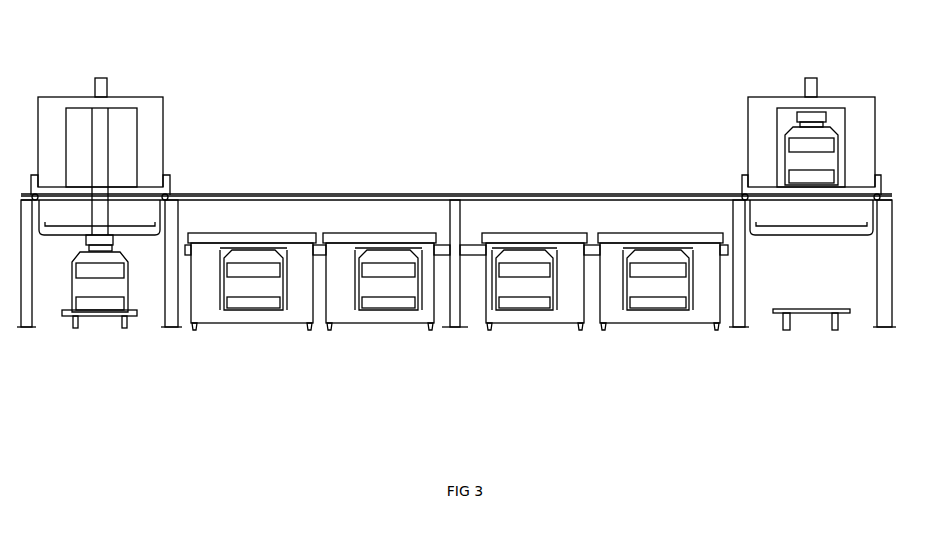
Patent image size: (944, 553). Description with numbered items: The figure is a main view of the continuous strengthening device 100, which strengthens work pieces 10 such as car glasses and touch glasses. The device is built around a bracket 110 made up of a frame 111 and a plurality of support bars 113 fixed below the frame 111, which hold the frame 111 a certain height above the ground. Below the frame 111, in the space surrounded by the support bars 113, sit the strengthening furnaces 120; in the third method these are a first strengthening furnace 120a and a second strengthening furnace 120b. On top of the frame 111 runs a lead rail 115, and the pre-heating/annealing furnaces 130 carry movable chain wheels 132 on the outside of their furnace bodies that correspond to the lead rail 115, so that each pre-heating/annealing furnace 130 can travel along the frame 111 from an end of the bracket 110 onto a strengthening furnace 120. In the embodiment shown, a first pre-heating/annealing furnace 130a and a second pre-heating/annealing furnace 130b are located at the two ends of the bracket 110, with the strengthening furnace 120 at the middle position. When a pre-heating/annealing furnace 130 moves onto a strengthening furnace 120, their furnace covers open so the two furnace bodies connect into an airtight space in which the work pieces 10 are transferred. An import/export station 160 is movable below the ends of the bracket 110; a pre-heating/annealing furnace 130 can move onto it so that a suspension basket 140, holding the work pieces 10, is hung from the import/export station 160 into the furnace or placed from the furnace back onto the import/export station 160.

The continuous strengthening device 100 is at (426, 50).
The work piece 10 is at (94, 308).
The bracket 110 is at (462, 121).
The frame 111 is at (573, 199).
The support bar 113 is at (175, 197).
The lead rail 115 is at (292, 196).
The strengthening furnace 120 is at (347, 300).
The first strengthening furnace 120a is at (238, 336).
The second strengthening furnace 120b is at (658, 336).
The pre-heating/annealing furnace 130 is at (763, 133).
The first pre-heating/annealing furnace 130a is at (127, 85).
The second pre-heating/annealing furnace 130b is at (862, 84).
The movable chain wheel 132 is at (742, 190).
The suspension basket 140 is at (128, 278).
The import/export station 160 is at (802, 313).